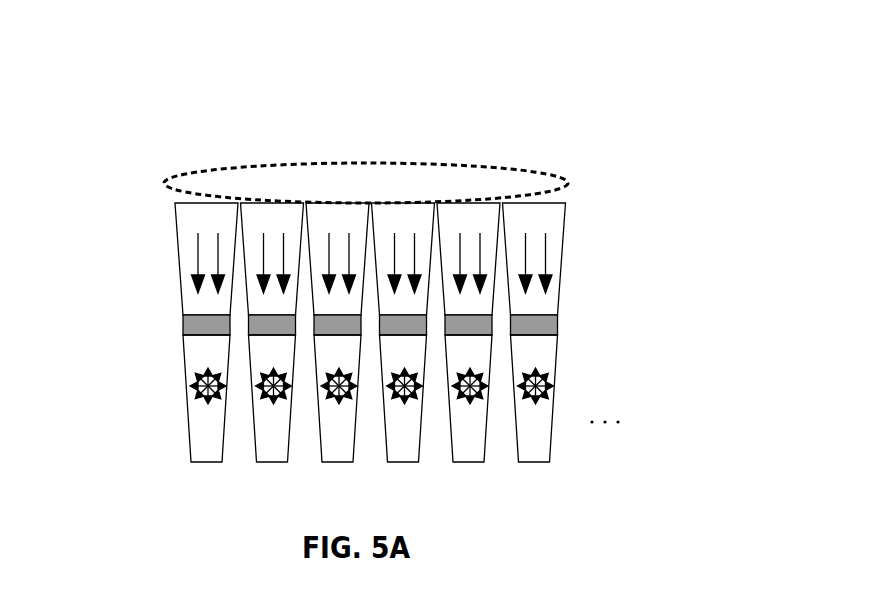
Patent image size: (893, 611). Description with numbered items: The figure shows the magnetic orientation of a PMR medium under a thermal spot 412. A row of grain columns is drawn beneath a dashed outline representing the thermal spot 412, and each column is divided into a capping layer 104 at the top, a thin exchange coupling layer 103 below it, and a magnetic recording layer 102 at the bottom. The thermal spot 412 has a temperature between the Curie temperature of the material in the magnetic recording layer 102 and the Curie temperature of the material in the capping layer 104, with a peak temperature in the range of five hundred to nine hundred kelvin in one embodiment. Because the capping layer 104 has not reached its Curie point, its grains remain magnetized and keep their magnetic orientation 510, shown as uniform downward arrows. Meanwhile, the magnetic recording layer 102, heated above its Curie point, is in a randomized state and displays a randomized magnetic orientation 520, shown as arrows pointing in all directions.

The thermal spot 412 is at (233, 166).
The capping layer 104 is at (163, 315).
The exchange coupling layer 103 is at (558, 326).
The magnetic recording layer 102 is at (167, 462).
The magnetic orientation 510 is at (482, 250).
The randomized magnetic orientation 520 is at (483, 402).